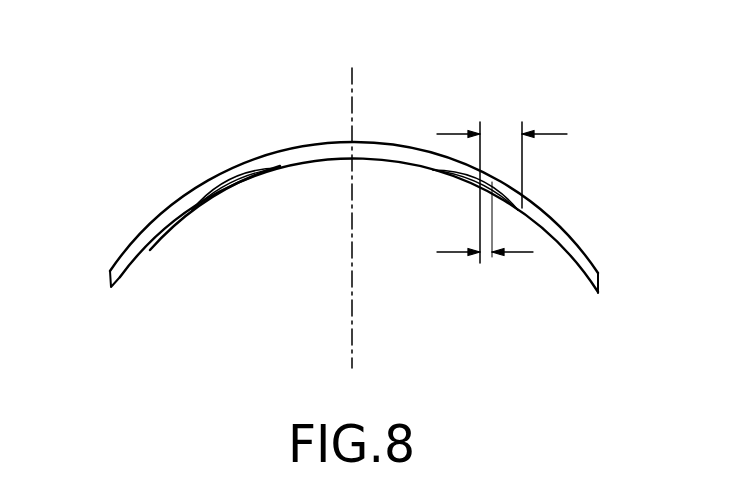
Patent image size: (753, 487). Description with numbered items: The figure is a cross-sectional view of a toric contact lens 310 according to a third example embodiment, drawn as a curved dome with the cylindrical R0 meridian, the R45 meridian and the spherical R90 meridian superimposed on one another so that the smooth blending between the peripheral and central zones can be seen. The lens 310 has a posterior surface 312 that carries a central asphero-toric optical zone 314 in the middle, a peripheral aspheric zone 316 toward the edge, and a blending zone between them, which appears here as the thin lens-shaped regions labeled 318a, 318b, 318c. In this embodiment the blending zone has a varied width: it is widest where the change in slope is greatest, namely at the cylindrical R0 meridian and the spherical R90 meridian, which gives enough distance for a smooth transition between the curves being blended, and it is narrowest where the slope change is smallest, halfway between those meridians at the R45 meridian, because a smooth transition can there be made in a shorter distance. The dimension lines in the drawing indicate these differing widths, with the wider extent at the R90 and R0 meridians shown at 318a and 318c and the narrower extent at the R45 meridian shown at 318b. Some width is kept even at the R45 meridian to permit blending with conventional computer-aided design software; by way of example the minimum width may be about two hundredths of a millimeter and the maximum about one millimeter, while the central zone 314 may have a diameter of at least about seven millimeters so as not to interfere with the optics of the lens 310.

The toric contact lens 310 is at (355, 190).
The posterior surface 312 is at (112, 282).
The central asphero-toric optical zone 314 is at (282, 170).
The peripheral aspheric zone 316 is at (170, 227).
The reference position line 318a is at (502, 134).
The reference position line 318b is at (488, 252).
The reference position line 318c is at (550, 163).
The spherical R90 meridian R90 is at (465, 172).
The R45 meridian R45 is at (475, 192).
The cylindrical R0 meridian R0 is at (462, 190).